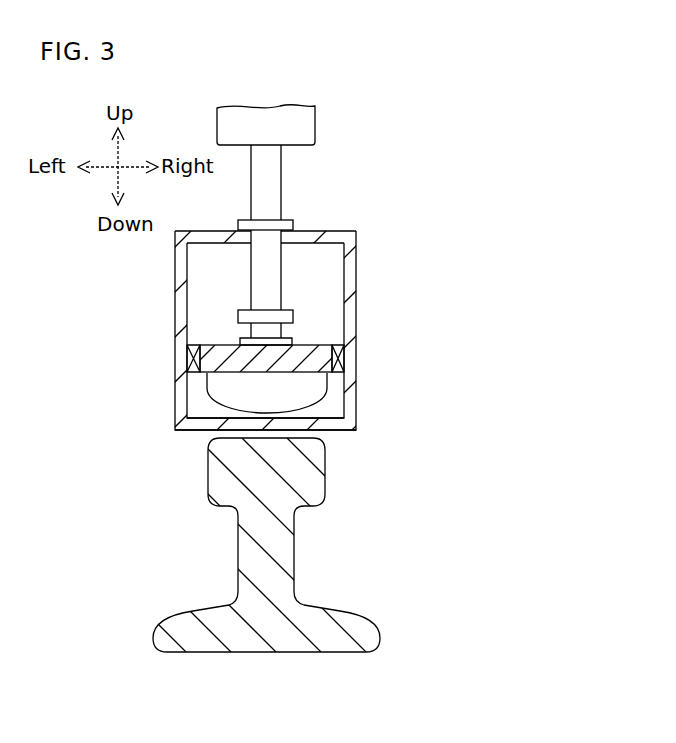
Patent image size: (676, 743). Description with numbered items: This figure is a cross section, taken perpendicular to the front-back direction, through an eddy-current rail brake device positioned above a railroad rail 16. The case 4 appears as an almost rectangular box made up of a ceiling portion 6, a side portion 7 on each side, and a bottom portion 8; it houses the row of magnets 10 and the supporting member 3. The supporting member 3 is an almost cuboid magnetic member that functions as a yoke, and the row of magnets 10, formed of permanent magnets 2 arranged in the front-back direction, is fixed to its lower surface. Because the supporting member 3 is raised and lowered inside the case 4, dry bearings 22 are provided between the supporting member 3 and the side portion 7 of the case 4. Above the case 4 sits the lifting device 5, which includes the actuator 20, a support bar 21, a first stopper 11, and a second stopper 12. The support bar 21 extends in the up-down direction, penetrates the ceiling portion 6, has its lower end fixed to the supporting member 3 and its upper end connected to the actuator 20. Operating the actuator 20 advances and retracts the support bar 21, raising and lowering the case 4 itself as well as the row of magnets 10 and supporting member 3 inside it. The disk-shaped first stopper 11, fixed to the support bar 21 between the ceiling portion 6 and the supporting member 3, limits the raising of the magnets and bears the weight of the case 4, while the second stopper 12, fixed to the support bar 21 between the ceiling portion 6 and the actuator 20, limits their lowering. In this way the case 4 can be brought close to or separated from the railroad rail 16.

The permanent magnet 2 is at (327, 380).
The supporting member 3 is at (205, 344).
The case 4 is at (275, 334).
The lifting device 5 is at (275, 298).
The ceiling portion 6 is at (214, 231).
The side portion 7 is at (175, 395).
The bottom portion 8 is at (203, 432).
The row of magnets 10 is at (328, 412).
The first stopper 11 is at (293, 315).
The second stopper 12 is at (293, 223).
The railroad rail 16 is at (325, 490).
The actuator 20 is at (315, 129).
The support bar 21 is at (281, 268).
The dry bearing 22 is at (340, 347).